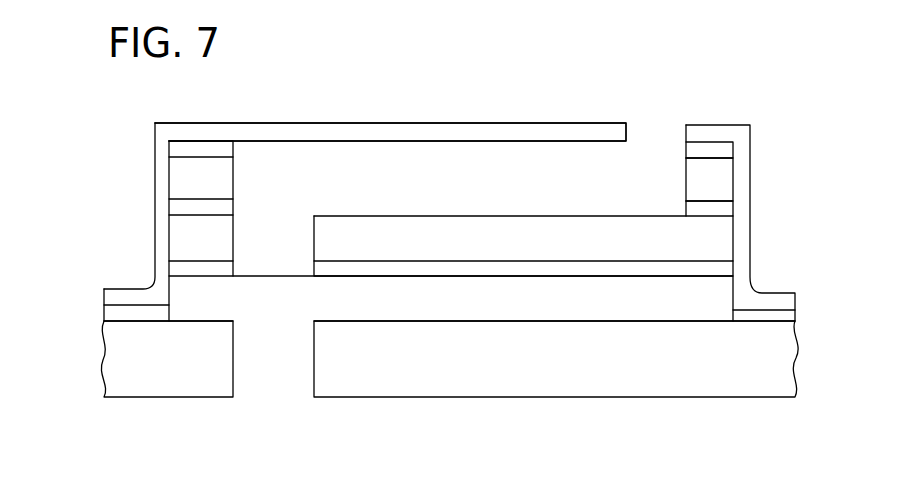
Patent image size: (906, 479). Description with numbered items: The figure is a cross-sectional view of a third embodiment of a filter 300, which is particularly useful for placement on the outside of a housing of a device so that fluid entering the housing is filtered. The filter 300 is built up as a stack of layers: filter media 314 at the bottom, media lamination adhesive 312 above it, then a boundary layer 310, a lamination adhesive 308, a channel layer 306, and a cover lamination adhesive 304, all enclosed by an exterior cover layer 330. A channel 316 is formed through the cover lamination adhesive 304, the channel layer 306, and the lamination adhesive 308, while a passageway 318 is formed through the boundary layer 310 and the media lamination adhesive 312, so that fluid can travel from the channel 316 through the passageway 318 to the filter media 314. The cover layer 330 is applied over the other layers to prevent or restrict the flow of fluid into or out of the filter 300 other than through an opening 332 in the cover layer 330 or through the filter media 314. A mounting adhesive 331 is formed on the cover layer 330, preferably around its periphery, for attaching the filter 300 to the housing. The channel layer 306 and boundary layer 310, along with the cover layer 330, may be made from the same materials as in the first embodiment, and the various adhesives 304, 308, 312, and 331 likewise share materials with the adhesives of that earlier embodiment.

The filter 300 is at (412, 108).
The cover lamination adhesive 304 is at (733, 152).
The channel layer 306 is at (733, 181).
The lamination adhesive 308 is at (733, 209).
The boundary layer 310 is at (733, 237).
The media lamination adhesive 312 is at (733, 269).
The filter media 314 is at (733, 303).
The channel 316 is at (350, 165).
The passageway 318 is at (270, 237).
The cover layer 330 is at (155, 153).
The mounting adhesive 331 is at (105, 312).
The opening 332 is at (652, 128).